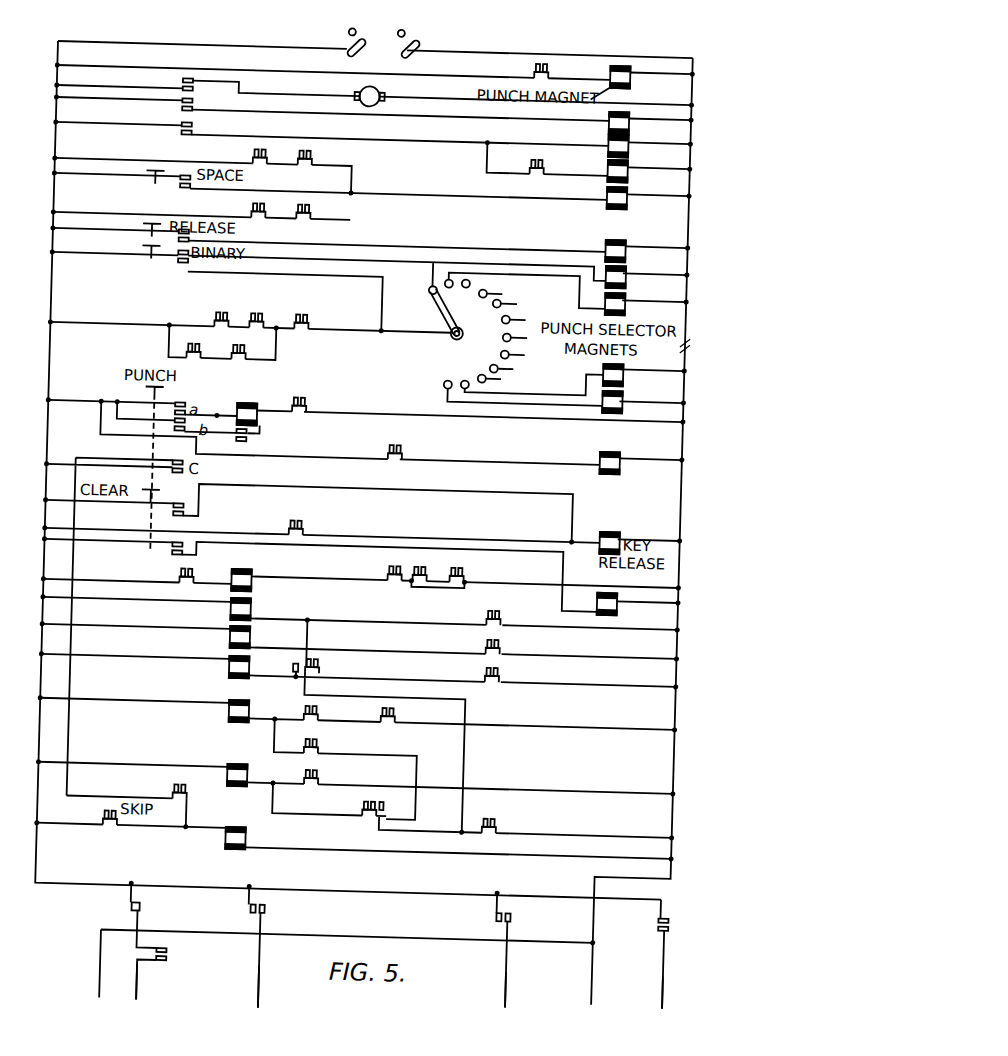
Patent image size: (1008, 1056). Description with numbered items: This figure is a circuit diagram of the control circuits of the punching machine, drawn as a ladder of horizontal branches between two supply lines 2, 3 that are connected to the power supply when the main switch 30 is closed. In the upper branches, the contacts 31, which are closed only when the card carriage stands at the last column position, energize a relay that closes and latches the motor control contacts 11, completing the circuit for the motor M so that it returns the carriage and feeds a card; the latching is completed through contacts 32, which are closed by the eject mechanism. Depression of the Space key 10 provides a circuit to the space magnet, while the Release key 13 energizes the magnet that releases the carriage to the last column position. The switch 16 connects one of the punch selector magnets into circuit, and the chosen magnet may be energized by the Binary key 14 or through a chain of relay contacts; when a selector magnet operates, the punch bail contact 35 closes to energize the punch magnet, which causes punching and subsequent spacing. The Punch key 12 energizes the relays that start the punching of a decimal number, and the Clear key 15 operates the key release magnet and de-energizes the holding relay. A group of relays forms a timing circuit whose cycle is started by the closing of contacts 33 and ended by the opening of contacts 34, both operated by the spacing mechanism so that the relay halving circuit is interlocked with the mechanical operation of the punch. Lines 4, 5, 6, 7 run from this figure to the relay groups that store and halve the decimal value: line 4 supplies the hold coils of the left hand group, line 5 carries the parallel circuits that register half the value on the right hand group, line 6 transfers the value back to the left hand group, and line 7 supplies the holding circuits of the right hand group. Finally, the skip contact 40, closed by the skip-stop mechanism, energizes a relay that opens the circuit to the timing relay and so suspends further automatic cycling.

The line 2 is at (60, 98).
The line 3 is at (693, 92).
The line 4 is at (128, 980).
The line 5 is at (247, 986).
The line 6 is at (495, 990).
The line 7 is at (655, 992).
The Space key 10 is at (150, 169).
The motor control contacts 11 is at (184, 82).
The Punch key 12 is at (155, 385).
The Release key 13 is at (148, 222).
The Binary key 14 is at (148, 244).
The Clear key 15 is at (167, 490).
The switch 16 is at (459, 326).
The main switch 30 is at (346, 38).
The contacts 31 is at (184, 100).
The contacts 32 is at (546, 152).
The contacts 33 is at (474, 565).
The contacts 34 is at (505, 806).
The punch bail contact 35 is at (545, 58).
The skip contact 40 is at (130, 826).
The motor M is at (381, 83).